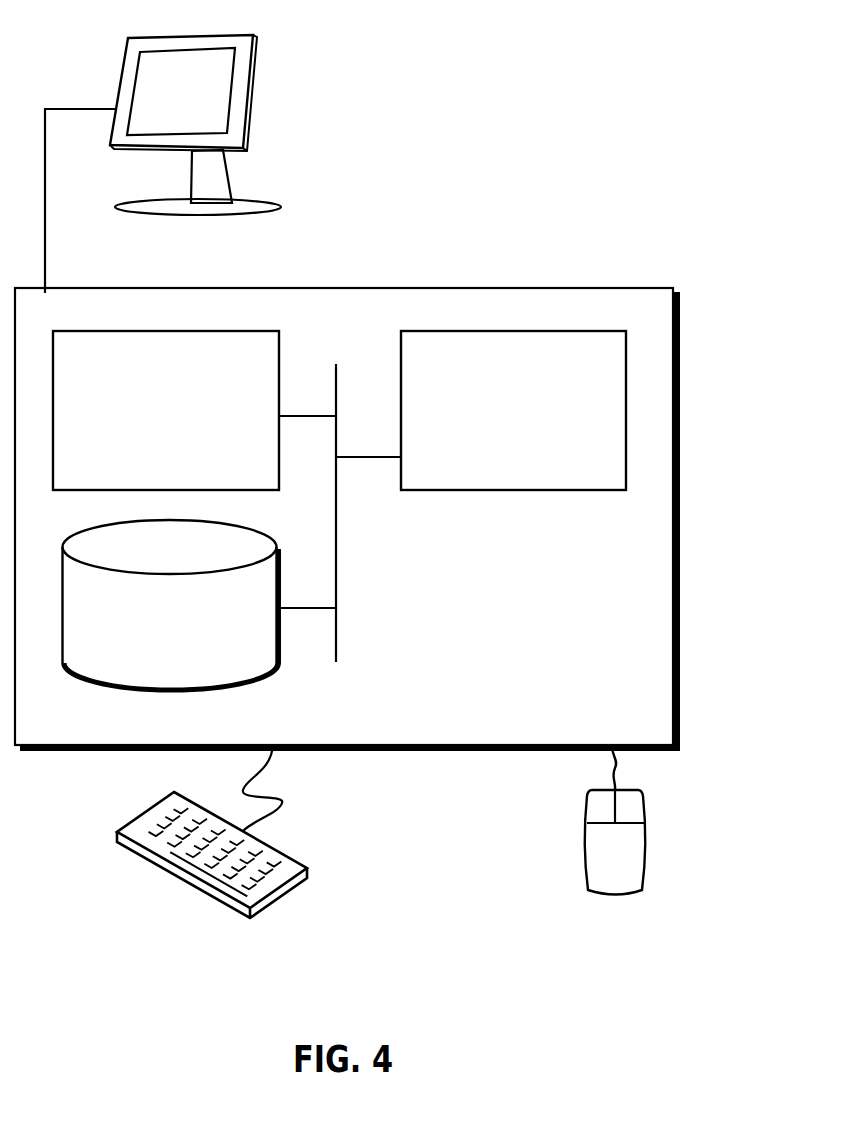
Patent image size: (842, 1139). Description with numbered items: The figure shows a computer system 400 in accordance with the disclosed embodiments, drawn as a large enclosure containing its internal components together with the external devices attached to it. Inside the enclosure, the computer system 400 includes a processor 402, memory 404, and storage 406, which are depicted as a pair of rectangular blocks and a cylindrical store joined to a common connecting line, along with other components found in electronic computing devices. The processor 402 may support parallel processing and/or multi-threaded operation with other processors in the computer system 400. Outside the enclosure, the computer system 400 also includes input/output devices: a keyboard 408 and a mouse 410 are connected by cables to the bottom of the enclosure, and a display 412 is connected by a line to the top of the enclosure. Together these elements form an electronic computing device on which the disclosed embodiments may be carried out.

The computer system 400 is at (390, 268).
The processor 402 is at (540, 423).
The memory 404 is at (191, 423).
The storage 406 is at (195, 635).
The keyboard 408 is at (137, 858).
The mouse 410 is at (637, 864).
The display 412 is at (195, 140).